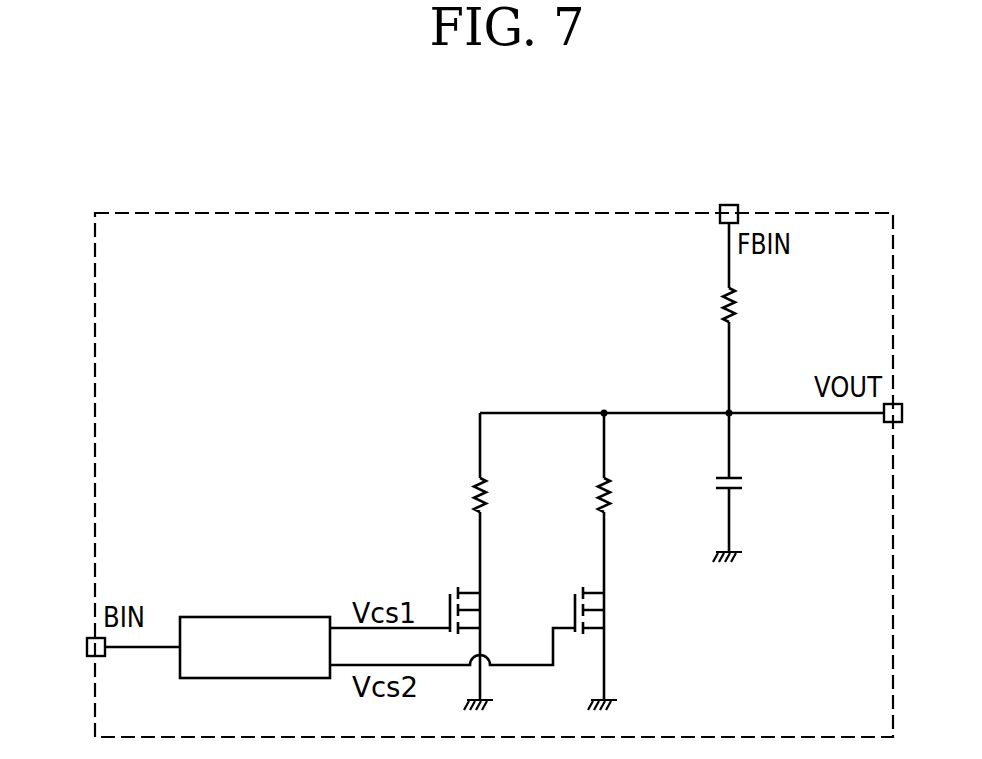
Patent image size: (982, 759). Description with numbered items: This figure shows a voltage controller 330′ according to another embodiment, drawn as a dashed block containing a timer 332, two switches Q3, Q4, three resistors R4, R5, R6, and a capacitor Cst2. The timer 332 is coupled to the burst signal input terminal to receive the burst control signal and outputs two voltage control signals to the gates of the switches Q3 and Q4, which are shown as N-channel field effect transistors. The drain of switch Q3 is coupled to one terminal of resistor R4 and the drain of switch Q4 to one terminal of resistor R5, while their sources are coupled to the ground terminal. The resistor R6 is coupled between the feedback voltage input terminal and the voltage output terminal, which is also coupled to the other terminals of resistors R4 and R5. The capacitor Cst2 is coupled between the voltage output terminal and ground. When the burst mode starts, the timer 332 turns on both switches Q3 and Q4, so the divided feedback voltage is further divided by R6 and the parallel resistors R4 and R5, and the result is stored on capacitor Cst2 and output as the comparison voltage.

The voltage controller 330′ is at (845, 212).
The timer 332 is at (270, 616).
The resistor R4 is at (462, 496).
The resistor R5 is at (585, 496).
The resistor R6 is at (711, 306).
The switch Q3 is at (485, 610).
The switch Q4 is at (609, 610).
The capacitor Cst2 is at (763, 488).